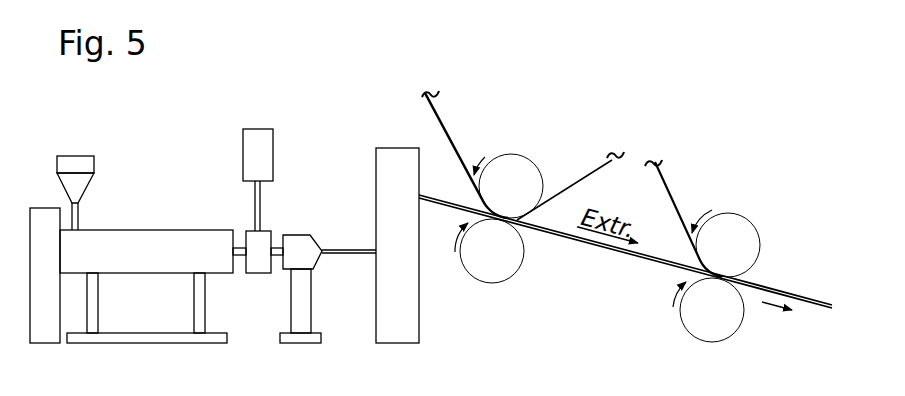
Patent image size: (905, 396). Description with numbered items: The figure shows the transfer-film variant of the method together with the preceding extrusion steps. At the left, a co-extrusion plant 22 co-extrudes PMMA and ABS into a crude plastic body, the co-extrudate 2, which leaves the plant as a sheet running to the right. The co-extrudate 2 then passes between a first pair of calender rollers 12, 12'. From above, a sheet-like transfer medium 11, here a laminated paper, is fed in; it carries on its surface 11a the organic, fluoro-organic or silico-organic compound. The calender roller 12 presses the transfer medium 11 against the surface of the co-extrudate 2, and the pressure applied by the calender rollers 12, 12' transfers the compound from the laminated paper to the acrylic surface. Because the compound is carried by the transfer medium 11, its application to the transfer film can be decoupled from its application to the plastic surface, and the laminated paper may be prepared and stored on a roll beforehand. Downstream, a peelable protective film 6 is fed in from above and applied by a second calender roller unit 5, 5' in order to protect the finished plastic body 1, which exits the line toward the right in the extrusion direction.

The co-extrusion plant 22 is at (182, 244).
The co-extrudate 2 is at (428, 201).
The plastic body 1 is at (800, 295).
The transfer medium 11 is at (455, 145).
The surface of the transfer medium 11a is at (434, 108).
The calender roller 12 is at (549, 171).
The calender roller 12' is at (486, 278).
The protective film 6 is at (665, 190).
The second calender roller unit roller 5 is at (742, 230).
The second calender roller unit roller 5' is at (692, 322).